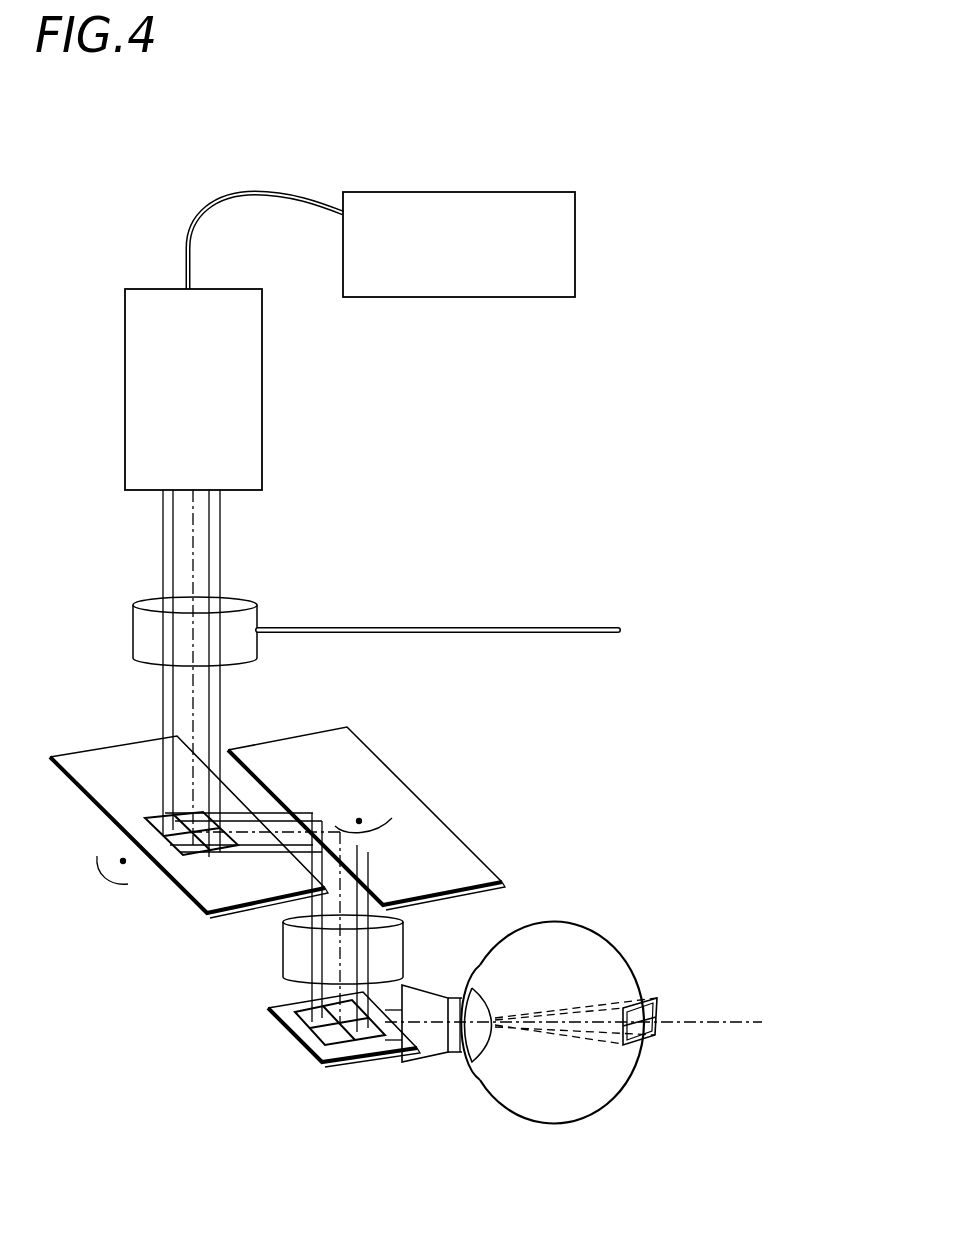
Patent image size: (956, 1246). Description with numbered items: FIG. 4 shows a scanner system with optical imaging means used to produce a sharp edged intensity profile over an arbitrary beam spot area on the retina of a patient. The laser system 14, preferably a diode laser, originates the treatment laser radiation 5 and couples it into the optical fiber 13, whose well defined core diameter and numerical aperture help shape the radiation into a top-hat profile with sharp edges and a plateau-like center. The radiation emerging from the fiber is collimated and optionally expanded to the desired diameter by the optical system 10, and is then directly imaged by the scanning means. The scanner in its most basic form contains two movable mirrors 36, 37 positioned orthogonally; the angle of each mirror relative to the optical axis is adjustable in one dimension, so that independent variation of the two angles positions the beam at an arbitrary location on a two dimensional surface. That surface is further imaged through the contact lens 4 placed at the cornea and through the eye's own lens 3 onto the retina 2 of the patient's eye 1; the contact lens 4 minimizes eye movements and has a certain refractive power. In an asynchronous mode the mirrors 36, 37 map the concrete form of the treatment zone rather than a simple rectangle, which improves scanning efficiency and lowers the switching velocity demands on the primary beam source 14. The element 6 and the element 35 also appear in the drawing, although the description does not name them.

The patient's eye 1 is at (607, 963).
The retina 2 is at (656, 1038).
The lens 3 is at (480, 967).
The contact lens 4 is at (440, 1058).
The treatment laser radiation 5 is at (220, 530).
The grid mask 6 is at (302, 1047).
The optical system 10 is at (258, 612).
The optical fiber 13 is at (243, 195).
The laser system 14 is at (575, 240).
The support bar 35 is at (620, 632).
The movable mirror 36 is at (89, 760).
The movable mirror 37 is at (362, 731).